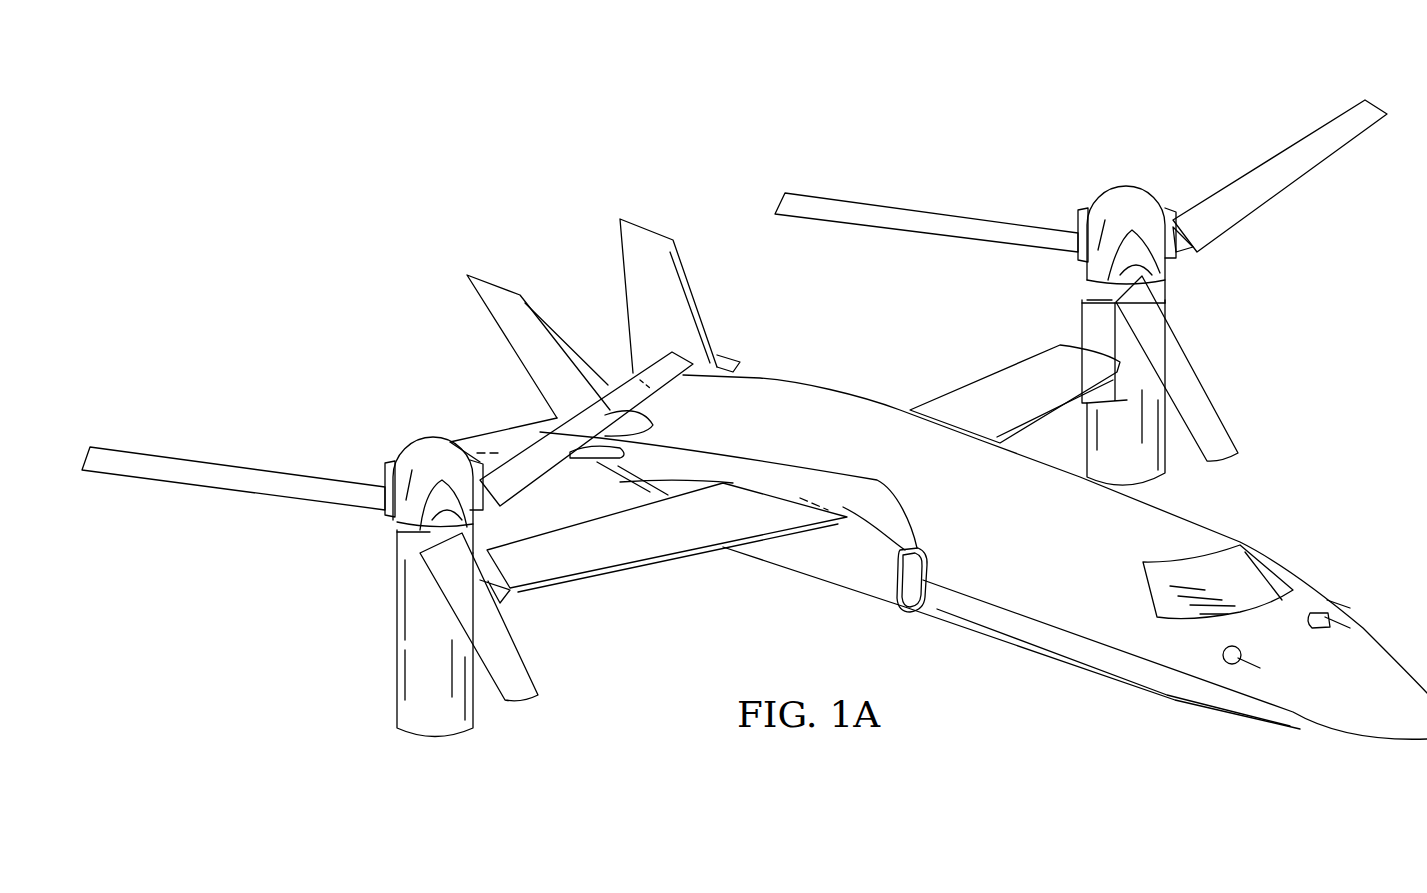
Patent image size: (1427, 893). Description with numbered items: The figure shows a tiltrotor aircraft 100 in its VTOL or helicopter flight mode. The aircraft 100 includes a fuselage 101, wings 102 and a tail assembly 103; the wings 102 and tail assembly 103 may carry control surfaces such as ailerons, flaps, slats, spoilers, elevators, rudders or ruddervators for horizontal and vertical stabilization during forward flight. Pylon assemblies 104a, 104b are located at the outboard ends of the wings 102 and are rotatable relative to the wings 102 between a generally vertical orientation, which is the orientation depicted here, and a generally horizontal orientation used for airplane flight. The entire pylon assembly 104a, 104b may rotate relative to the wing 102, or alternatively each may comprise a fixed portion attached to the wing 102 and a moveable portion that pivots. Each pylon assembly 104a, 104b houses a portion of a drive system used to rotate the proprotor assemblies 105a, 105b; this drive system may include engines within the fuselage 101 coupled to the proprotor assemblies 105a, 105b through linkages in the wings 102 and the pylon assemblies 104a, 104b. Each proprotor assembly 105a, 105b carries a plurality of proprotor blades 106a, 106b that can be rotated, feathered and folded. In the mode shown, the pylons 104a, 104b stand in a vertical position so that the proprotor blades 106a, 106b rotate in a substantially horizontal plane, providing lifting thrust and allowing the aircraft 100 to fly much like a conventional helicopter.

The tiltrotor aircraft 100 is at (518, 234).
The fuselage 101 is at (805, 378).
The wings 102 is at (660, 560).
The tail assembly 103 is at (620, 263).
The pylon assembly 104a is at (392, 600).
The pylon assembly 104b is at (1165, 468).
The proprotor assembly 105a is at (404, 427).
The proprotor assembly 105b is at (1160, 172).
The proprotor blades 106a is at (222, 488).
The proprotor blades 106b is at (880, 208).